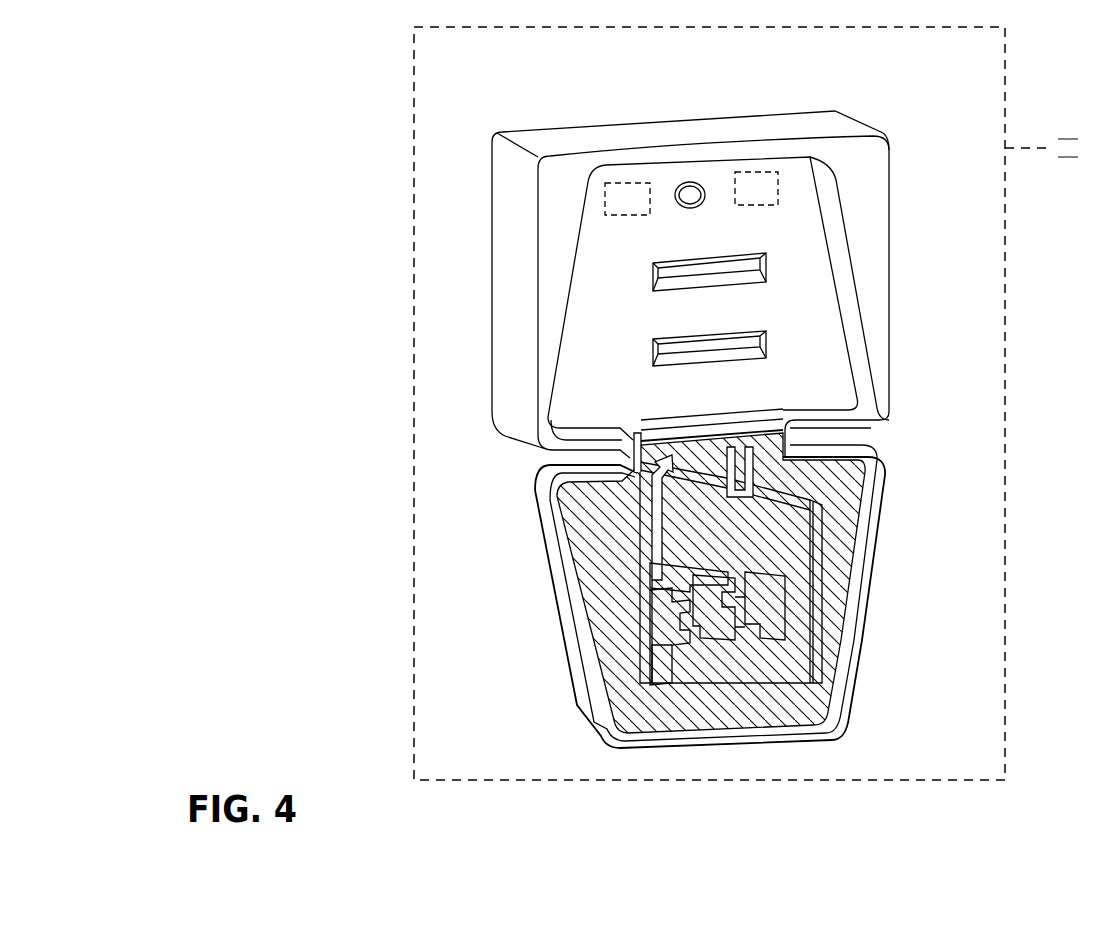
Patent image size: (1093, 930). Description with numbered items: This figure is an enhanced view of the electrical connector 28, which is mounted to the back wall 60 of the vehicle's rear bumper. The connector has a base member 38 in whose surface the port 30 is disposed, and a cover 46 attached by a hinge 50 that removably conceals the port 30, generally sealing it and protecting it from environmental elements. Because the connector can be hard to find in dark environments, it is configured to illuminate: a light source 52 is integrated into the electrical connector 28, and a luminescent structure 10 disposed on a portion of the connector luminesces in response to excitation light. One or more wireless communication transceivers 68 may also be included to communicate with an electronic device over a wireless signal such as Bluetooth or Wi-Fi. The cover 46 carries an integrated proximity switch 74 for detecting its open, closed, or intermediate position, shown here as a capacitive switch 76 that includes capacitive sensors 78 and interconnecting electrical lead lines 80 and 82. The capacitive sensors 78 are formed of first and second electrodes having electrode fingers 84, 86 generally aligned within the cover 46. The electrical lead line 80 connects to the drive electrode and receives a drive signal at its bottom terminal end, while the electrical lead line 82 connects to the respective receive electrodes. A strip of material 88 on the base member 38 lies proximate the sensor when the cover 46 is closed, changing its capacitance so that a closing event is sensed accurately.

The luminescent structure 10 is at (602, 555).
The electrical connector 28 is at (848, 215).
The port 30 is at (745, 276).
The base member 38 is at (800, 195).
The cover 46 is at (840, 545).
The hinge 50 is at (880, 428).
The light source 52 is at (690, 188).
The back wall 60 is at (443, 258).
The wireless communication transceivers 68 is at (748, 170).
The proximity switch 74 is at (652, 628).
The capacitive switch 76 is at (636, 683).
The capacitive sensors 78 is at (827, 590).
The electrical lead line 80 is at (657, 446).
The electrical lead line 82 is at (757, 440).
The electrode fingers 84 is at (800, 683).
The electrode fingers 86 is at (790, 612).
The material 88 is at (620, 178).